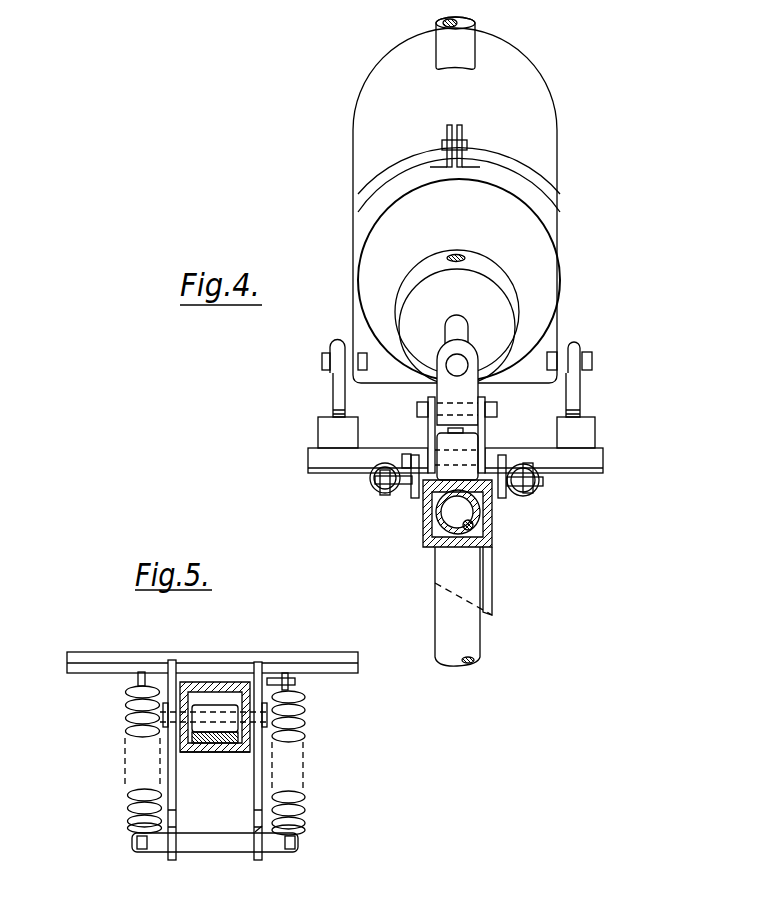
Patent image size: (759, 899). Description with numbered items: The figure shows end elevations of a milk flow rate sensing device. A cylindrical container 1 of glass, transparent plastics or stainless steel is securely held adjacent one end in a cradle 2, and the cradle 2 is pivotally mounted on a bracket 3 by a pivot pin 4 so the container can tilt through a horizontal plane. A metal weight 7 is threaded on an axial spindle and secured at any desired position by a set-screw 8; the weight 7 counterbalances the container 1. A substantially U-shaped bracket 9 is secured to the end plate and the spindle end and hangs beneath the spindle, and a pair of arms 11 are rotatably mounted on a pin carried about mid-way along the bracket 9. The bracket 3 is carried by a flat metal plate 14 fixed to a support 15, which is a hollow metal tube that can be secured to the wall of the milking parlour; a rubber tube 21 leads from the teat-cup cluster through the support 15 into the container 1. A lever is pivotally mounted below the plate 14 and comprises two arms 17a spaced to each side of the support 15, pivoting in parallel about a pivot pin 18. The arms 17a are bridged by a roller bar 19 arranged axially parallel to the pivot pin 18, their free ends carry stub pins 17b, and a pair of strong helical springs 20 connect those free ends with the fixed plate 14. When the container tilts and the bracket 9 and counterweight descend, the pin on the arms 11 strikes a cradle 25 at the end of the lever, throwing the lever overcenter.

In FIG. 4, the cylindrical container 1 is at (543, 129).
In FIG. 4, the cradle 2 is at (463, 130).
In FIG. 4, the bracket 3 is at (328, 400).
In FIG. 4, the pivot pin 4 is at (322, 362).
In FIG. 4, the metal weight 7 is at (488, 295).
In FIG. 4, the set-screw 8 is at (466, 258).
In FIG. 4, the U-shaped bracket 9 is at (473, 372).
In FIG. 4, the arms 11 is at (428, 425).
In FIG. 4, the flat metal plate 14 is at (603, 458).
In FIG. 5, the flat metal plate 14 is at (360, 665).
In FIG. 4, the support 15 is at (447, 548).
In FIG. 5, the support 15 is at (200, 682).
In FIG. 4, the arms 17a is at (414, 500).
In FIG. 5, the arms 17a is at (254, 785).
In FIG. 4, the stub pins 17b is at (386, 497).
In FIG. 5, the stub pins 17b is at (296, 845).
In FIG. 5, the pivot pin 18 is at (295, 684).
In FIG. 4, the roller bar 19 is at (490, 518).
In FIG. 5, the roller bar 19 is at (222, 705).
In FIG. 4, the helical springs 20 is at (373, 491).
In FIG. 5, the helical springs 20 is at (300, 787).
In FIG. 4, the rubber tube 21 is at (470, 43).
In FIG. 5, the rubber tube 21 is at (218, 743).
In FIG. 5, the cradle 25 is at (177, 827).